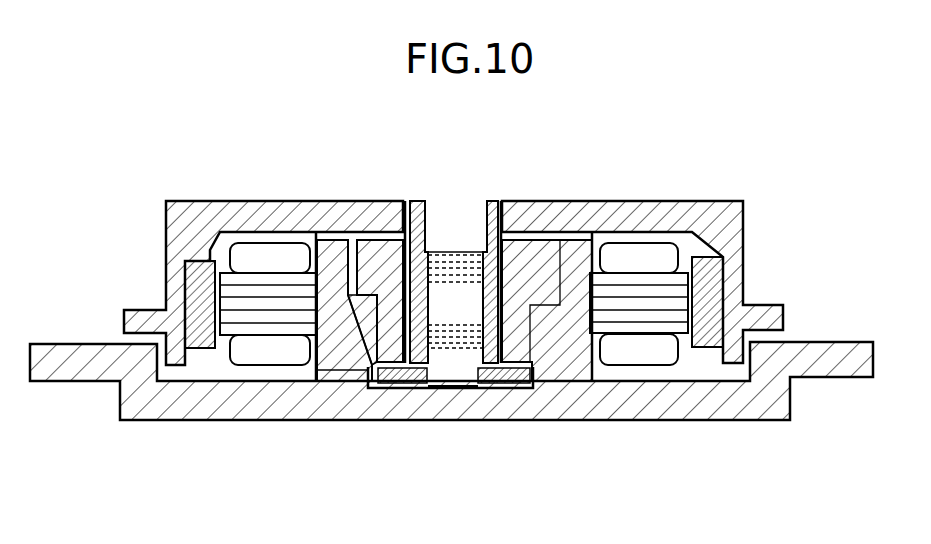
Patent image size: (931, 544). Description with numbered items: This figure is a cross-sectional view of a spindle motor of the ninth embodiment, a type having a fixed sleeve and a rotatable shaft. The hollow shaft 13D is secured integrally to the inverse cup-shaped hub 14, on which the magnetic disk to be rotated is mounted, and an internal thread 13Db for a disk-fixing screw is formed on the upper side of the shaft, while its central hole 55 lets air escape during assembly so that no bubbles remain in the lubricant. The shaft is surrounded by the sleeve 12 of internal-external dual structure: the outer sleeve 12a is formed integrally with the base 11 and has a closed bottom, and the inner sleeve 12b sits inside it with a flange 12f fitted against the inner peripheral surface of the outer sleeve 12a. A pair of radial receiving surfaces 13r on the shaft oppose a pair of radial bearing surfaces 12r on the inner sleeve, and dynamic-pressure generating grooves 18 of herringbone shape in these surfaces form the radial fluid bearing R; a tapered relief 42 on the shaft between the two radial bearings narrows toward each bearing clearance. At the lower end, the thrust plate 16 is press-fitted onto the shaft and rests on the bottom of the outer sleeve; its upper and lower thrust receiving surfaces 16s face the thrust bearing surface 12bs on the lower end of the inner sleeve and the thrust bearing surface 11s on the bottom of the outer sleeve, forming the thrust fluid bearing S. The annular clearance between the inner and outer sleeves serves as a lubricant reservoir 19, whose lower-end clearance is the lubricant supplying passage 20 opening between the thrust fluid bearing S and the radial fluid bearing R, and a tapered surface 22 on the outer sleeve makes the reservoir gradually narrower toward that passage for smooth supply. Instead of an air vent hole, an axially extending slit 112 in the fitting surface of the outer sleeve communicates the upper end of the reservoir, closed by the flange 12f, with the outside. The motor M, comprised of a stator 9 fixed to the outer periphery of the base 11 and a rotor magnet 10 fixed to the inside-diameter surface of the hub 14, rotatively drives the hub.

The hub 14 is at (178, 220).
The base 11 is at (737, 410).
The motor M is at (504, 304).
The stator 9 is at (660, 262).
The rotor magnet 10 is at (703, 290).
The radial fluid bearing R is at (385, 310).
The sleeve 12 is at (337, 250).
The slit 112 is at (350, 240).
The outer sleeve 12a is at (322, 240).
The inner sleeve 12b is at (360, 242).
The flange 12f is at (403, 290).
The radial bearing surfaces 12r is at (337, 347).
The radial receiving surfaces 13r is at (362, 327).
The dynamic-pressure generating grooves 18 is at (450, 413).
The thrust plate 16 is at (417, 386).
The central hole 55 is at (447, 390).
The relief 42 is at (437, 389).
The hollow shaft 13D is at (488, 225).
The internal thread 13Db is at (425, 228).
The tapered surface 22 is at (548, 310).
The lubricant supplying passage 20 is at (545, 345).
The lubricant reservoir 19 is at (555, 320).
The thrust fluid bearing S is at (551, 436).
The thrust bearing surface 12bs is at (500, 389).
The thrust bearing surface 11s is at (536, 389).
The thrust receiving surfaces 16s is at (577, 424).